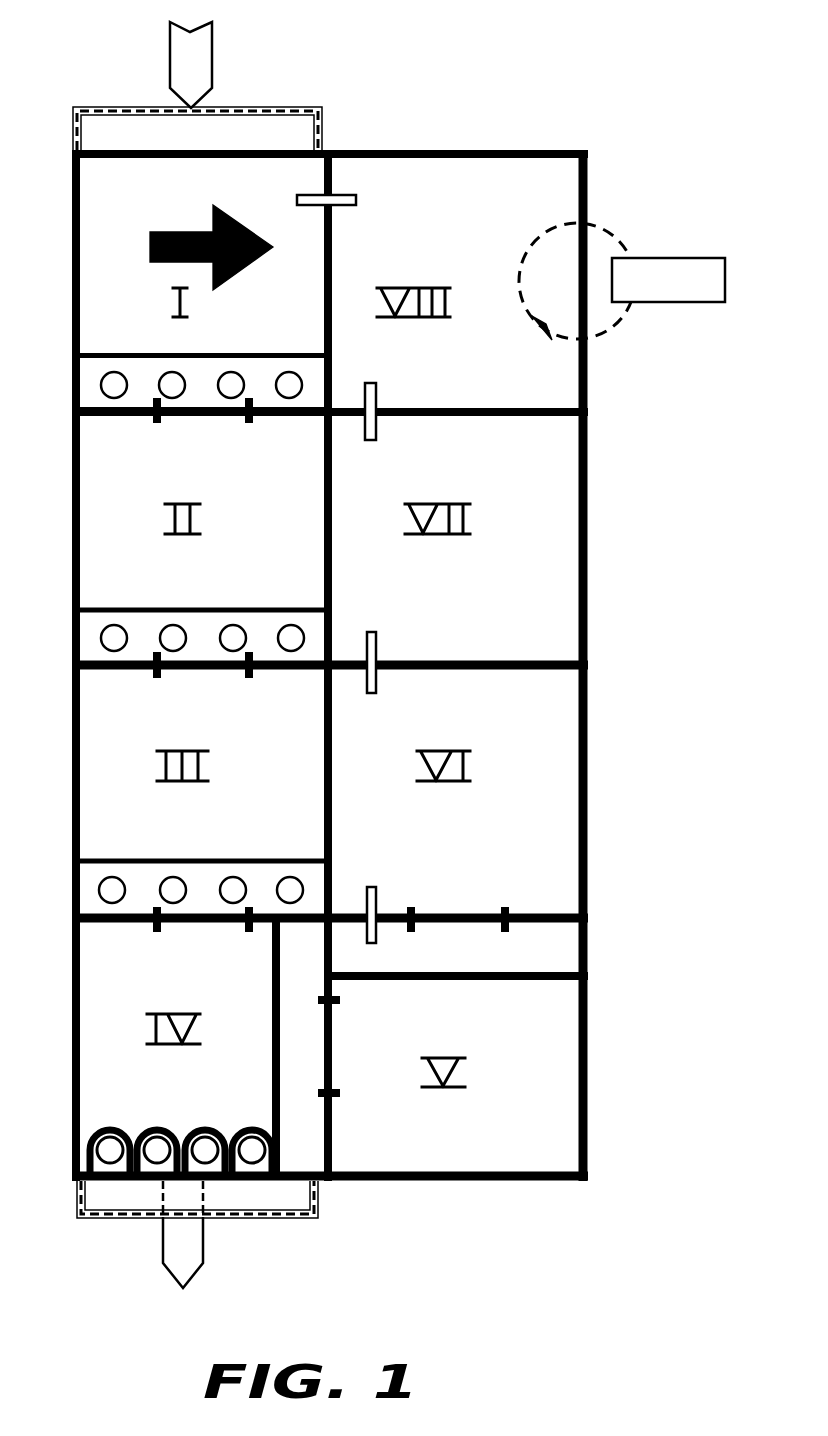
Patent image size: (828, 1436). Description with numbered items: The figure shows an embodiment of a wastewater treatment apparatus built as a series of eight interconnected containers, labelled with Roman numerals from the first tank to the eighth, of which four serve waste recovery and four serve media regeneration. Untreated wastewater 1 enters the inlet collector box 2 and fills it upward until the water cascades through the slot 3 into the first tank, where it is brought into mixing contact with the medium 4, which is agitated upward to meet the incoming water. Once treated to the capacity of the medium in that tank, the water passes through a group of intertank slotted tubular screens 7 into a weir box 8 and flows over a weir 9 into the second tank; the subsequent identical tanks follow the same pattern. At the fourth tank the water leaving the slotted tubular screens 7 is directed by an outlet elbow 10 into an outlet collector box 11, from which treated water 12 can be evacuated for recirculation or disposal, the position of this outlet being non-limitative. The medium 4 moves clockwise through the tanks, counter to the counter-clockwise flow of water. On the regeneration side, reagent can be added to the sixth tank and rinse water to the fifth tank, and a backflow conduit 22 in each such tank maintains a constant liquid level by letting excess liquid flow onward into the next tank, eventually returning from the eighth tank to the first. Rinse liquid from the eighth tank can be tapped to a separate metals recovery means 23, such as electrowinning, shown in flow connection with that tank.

The untreated wastewater 1 is at (187, 23).
The inlet collector box 2 is at (73, 118).
The slot 3 is at (183, 150).
The medium 4 is at (152, 238).
The slotted tubular screens 7 is at (101, 385).
The weir box 8 is at (178, 354).
The weir 9 is at (185, 417).
The outlet elbow 10 is at (126, 1128).
The outlet collector box 11 is at (79, 1216).
The treated water 12 is at (183, 1288).
The backflow conduit 22 is at (342, 194).
The metals recovery means 23 is at (640, 298).